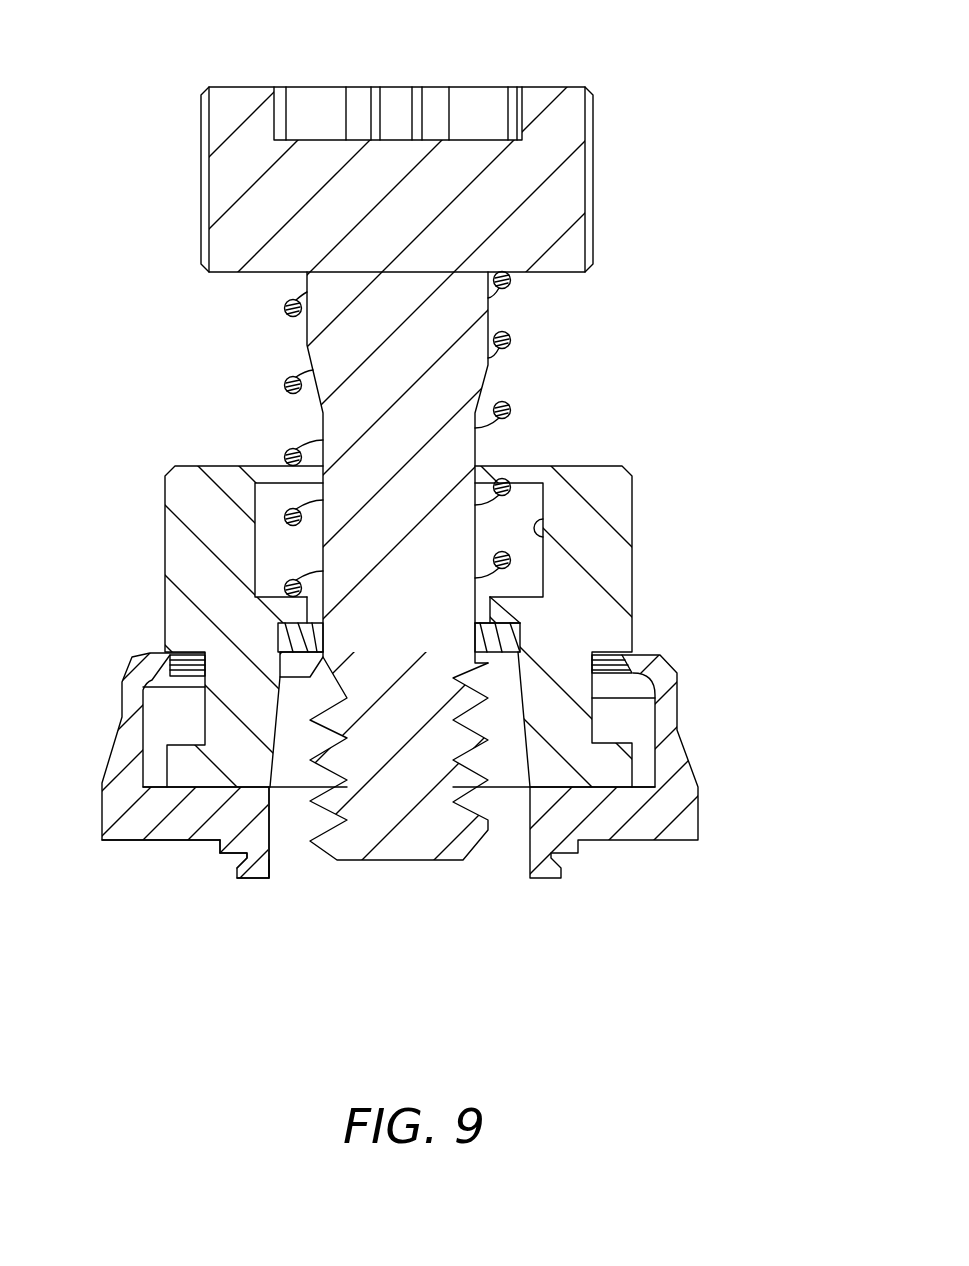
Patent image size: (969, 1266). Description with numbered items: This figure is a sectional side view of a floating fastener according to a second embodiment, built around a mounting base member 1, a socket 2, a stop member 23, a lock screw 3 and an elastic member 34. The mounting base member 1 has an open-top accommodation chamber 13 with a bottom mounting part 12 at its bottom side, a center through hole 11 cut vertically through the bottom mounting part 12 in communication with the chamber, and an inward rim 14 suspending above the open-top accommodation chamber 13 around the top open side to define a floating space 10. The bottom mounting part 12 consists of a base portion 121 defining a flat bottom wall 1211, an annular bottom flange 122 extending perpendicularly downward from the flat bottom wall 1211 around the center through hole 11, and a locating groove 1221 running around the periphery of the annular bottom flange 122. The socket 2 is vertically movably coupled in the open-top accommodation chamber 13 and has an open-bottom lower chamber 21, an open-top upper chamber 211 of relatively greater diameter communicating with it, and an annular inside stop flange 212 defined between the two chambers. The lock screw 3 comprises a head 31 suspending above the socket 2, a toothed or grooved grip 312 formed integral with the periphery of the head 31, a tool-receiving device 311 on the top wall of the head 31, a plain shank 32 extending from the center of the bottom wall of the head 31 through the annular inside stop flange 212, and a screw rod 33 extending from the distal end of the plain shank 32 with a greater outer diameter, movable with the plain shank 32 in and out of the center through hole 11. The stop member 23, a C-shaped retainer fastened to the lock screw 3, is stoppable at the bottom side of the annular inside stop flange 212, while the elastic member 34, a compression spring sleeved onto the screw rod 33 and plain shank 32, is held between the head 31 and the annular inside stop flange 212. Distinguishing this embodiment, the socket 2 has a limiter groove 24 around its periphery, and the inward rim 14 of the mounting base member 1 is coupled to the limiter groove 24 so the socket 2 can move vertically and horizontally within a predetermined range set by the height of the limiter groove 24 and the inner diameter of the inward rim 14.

The lock screw 3 is at (484, 633).
The head 31 is at (435, 633).
The tool-receiving device 311 is at (484, 121).
The toothed grip 312 is at (590, 160).
The plain shank 32 is at (484, 633).
The screw rod 33 is at (388, 800).
The elastic member 34 is at (288, 386).
The socket 2 is at (484, 633).
The open-bottom lower chamber 21 is at (513, 673).
The open-top upper chamber 211 is at (543, 530).
The annular inside stop flange 212 is at (500, 615).
The stop member 23 is at (288, 640).
The limiter groove 24 is at (593, 728).
The mounting base member 1 is at (484, 633).
The floating space 10 is at (170, 718).
The center through hole 11 is at (269, 858).
The bottom mounting part 12 is at (149, 909).
The base portion 121 is at (120, 828).
The flat bottom wall 1211 is at (153, 840).
The annular bottom flange 122 is at (237, 870).
The locating groove 1221 is at (247, 860).
The open-top accommodation chamber 13 is at (147, 743).
The inward rim 14 is at (157, 663).